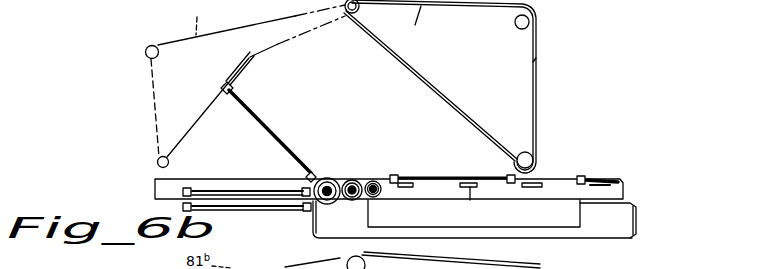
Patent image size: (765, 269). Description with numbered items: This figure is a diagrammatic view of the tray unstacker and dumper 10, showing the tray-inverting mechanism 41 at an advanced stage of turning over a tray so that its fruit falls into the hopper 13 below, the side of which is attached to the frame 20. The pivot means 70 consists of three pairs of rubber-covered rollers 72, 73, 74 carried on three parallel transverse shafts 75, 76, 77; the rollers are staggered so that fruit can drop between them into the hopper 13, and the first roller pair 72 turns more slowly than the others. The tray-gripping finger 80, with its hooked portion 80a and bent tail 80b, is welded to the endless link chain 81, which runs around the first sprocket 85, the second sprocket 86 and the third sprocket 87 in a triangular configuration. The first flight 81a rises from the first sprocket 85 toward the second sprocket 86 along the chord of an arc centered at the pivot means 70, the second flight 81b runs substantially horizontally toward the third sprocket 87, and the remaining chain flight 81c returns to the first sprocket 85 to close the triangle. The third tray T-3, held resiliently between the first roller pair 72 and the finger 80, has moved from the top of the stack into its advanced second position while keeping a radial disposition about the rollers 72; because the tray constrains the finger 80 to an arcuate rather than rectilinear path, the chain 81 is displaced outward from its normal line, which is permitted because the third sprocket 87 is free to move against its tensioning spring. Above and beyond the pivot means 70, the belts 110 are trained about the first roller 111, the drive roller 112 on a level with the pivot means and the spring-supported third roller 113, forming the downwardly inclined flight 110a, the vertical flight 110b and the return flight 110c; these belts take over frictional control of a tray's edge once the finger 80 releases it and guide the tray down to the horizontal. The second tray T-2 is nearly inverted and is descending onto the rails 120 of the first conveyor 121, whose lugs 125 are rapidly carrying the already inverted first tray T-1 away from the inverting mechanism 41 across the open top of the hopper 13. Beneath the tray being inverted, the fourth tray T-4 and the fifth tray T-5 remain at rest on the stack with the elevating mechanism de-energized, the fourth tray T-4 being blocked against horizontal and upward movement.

The tray unstacker and dumper 10 is at (138, 93).
The hopper 13 is at (632, 220).
The frame 20 is at (152, 180).
The tray-inverting mechanism 41 is at (550, 83).
The pivot means 70 is at (338, 172).
The first roller pair 72 is at (312, 213).
The second roller pair 73 is at (351, 200).
The third roller pair 74 is at (377, 199).
The first shaft 75 is at (333, 178).
The second shaft 76 is at (350, 178).
The third shaft 77 is at (375, 178).
The tray-gripping finger 80 is at (245, 62).
The hooked portion 80a is at (221, 88).
The bent tail 80b is at (213, 103).
The endless link chain 81 is at (146, 83).
The first flight of the link chain 81a is at (273, 45).
The second flight of the link chain 81b is at (180, 18).
The link portion 81c is at (145, 68).
The first sprocket 85 is at (157, 160).
The second sprocket 86 is at (303, 19).
The third sprocket 87 is at (145, 48).
The belts 110 is at (538, 43).
The first flight of the belt 110a is at (399, 62).
The second flight of the belt 110b is at (536, 60).
The third flight of the belt 110c is at (434, 21).
The first roller 111 is at (360, 12).
The second roller 112 is at (534, 158).
The third roller 113 is at (535, 22).
The rails 120 is at (528, 188).
The first conveyor 121 is at (543, 173).
The lugs 125 is at (397, 174).
The first tray T-1 is at (625, 178).
The second tray T-2 is at (473, 148).
The third tray T-3 is at (248, 102).
The fourth tray T-4 is at (244, 190).
The fifth tray T-5 is at (182, 204).